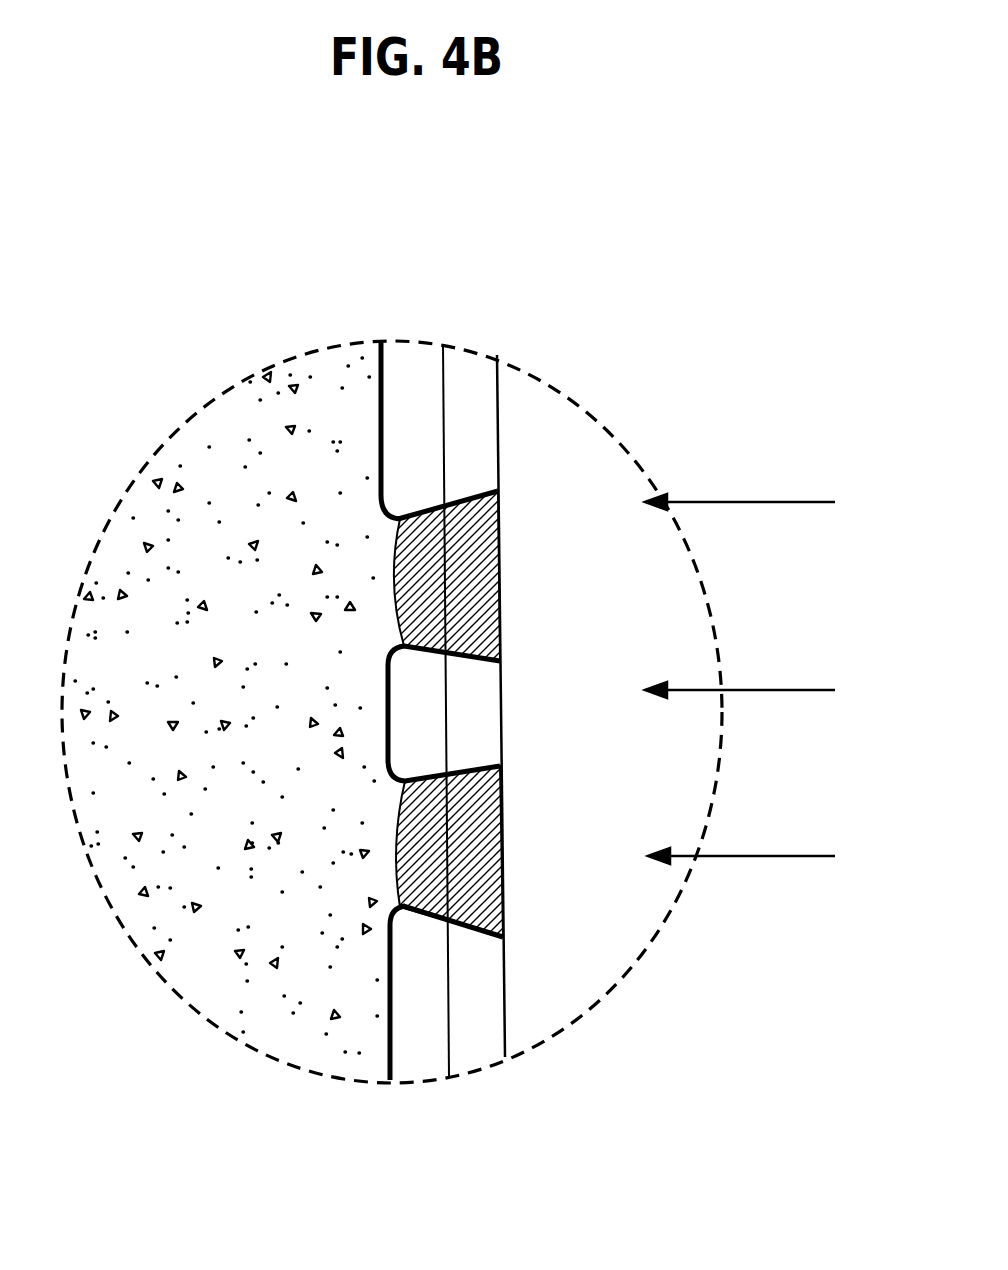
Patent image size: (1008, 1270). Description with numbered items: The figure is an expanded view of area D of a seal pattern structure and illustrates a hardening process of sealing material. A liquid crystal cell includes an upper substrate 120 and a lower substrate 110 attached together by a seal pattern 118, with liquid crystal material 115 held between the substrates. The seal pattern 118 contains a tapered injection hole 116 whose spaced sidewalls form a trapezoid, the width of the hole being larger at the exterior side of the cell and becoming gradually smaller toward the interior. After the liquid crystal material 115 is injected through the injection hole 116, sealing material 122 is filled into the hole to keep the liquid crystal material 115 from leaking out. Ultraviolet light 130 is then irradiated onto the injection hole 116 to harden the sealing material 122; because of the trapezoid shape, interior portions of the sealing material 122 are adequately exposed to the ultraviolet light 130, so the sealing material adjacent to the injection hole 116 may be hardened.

The area D is at (560, 390).
The lower substrate 110 is at (467, 372).
The liquid crystal material 115 is at (218, 950).
The tapered injection hole 116 is at (472, 487).
The seal pattern 118 is at (388, 709).
The upper substrate 120 is at (408, 368).
The sealing material 122 is at (480, 576).
The ultraviolet light 130 is at (770, 679).